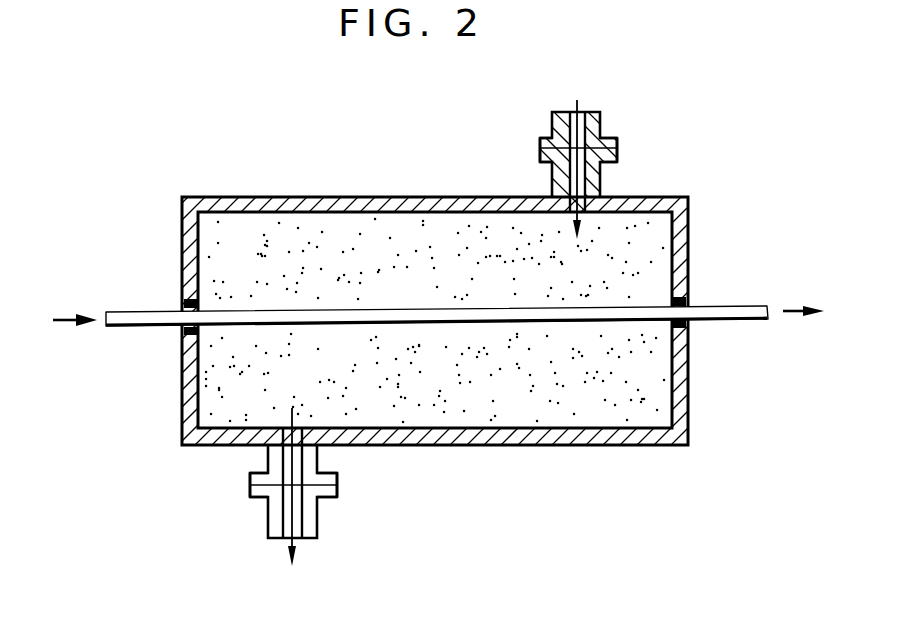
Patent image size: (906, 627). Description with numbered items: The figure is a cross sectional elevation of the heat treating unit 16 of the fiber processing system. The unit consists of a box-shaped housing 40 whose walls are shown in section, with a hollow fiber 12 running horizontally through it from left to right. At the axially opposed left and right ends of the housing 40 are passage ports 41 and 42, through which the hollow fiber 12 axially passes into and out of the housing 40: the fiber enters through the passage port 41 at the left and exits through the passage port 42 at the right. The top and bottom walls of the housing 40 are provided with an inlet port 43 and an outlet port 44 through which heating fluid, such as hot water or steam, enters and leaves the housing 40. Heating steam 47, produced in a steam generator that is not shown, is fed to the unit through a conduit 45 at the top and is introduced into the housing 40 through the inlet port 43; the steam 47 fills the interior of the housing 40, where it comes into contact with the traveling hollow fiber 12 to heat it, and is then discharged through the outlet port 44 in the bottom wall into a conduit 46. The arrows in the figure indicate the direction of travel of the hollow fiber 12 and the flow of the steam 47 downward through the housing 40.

The hollow fiber 12 is at (147, 315).
The heat treating unit 16 is at (258, 153).
The housing 40 is at (532, 446).
The passage port 41 is at (186, 340).
The passage port 42 is at (685, 338).
The inlet port 43 is at (594, 178).
The outlet port 44 is at (282, 455).
The conduit 45 is at (601, 128).
The conduit 46 is at (270, 518).
The heating steam 47 is at (390, 232).